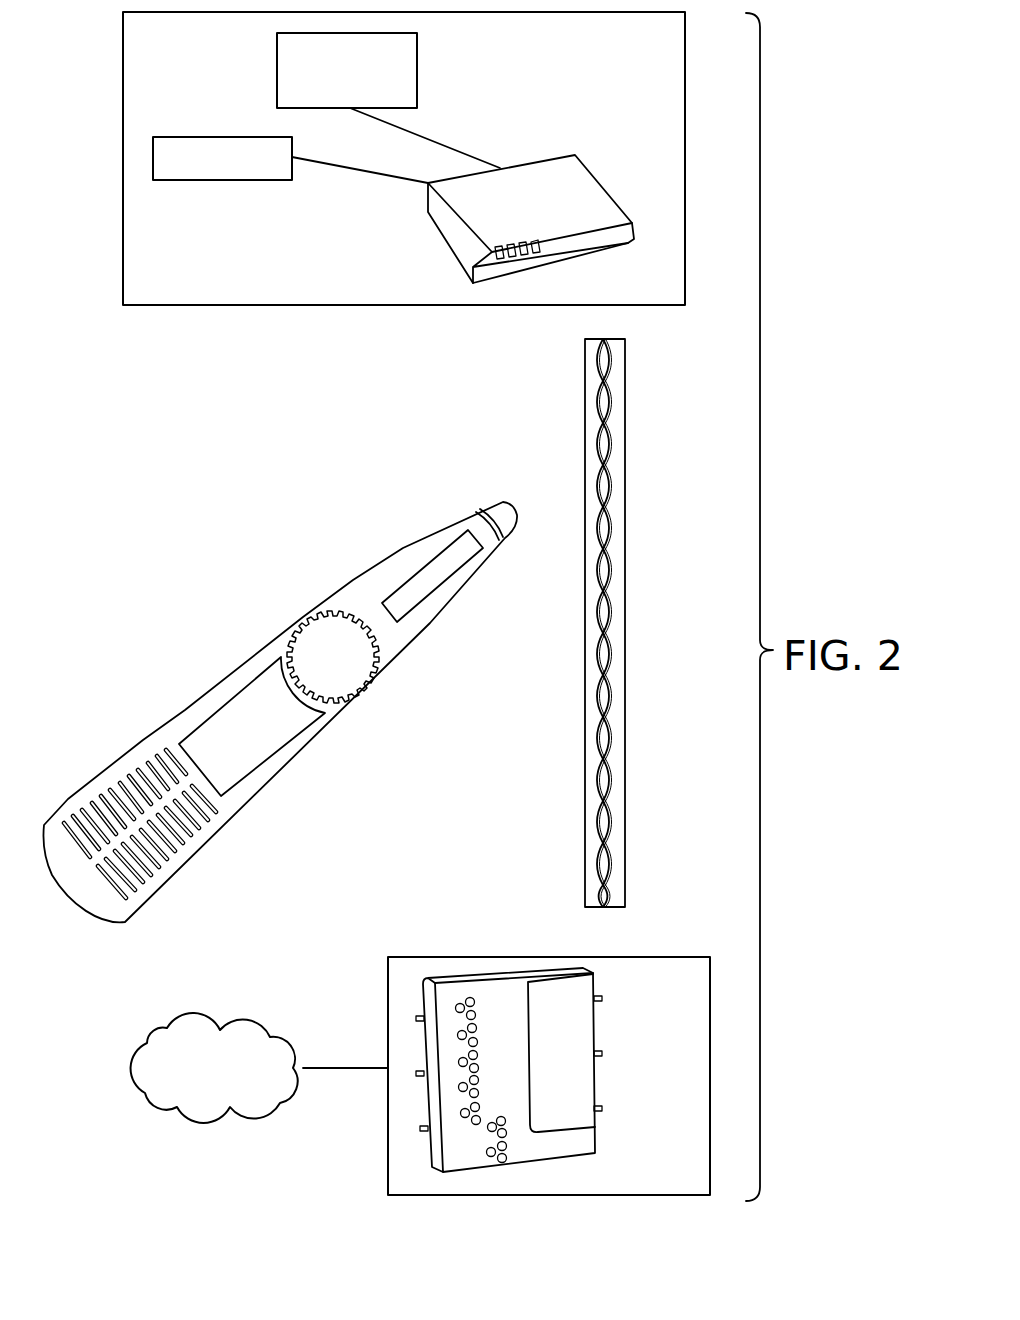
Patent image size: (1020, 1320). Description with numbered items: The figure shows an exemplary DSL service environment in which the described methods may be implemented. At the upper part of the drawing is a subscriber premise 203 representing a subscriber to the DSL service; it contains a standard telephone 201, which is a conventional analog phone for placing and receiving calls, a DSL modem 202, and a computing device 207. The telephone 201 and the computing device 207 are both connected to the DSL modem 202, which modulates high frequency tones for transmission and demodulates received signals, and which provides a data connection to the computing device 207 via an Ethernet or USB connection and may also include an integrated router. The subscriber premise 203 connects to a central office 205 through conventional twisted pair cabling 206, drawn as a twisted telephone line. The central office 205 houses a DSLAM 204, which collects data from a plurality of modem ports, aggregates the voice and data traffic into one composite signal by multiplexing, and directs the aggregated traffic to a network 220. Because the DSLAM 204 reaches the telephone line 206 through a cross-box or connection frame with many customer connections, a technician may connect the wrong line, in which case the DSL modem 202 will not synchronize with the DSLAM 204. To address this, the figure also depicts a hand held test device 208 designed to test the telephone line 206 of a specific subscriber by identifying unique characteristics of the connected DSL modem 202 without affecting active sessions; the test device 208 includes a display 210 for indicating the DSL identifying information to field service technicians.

The telephone 201 is at (198, 137).
The DSL modem 202 is at (573, 182).
The subscriber premise 203 is at (290, 305).
The digital subscriber line access multiplexer (DSLAM) 204 is at (578, 1030).
The central office 205 is at (595, 1195).
The twisted pair cabling 206 is at (603, 592).
The computing device 207 is at (417, 62).
The hand held test device 208 is at (252, 795).
The display 210 is at (403, 607).
The network 220 is at (138, 1093).